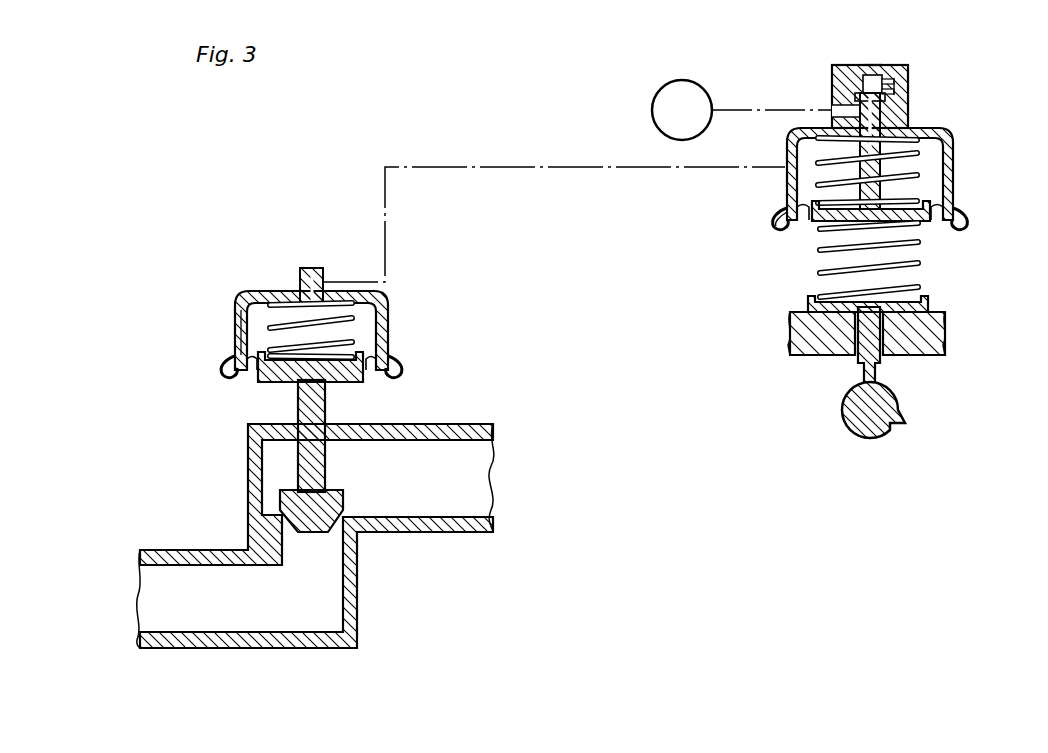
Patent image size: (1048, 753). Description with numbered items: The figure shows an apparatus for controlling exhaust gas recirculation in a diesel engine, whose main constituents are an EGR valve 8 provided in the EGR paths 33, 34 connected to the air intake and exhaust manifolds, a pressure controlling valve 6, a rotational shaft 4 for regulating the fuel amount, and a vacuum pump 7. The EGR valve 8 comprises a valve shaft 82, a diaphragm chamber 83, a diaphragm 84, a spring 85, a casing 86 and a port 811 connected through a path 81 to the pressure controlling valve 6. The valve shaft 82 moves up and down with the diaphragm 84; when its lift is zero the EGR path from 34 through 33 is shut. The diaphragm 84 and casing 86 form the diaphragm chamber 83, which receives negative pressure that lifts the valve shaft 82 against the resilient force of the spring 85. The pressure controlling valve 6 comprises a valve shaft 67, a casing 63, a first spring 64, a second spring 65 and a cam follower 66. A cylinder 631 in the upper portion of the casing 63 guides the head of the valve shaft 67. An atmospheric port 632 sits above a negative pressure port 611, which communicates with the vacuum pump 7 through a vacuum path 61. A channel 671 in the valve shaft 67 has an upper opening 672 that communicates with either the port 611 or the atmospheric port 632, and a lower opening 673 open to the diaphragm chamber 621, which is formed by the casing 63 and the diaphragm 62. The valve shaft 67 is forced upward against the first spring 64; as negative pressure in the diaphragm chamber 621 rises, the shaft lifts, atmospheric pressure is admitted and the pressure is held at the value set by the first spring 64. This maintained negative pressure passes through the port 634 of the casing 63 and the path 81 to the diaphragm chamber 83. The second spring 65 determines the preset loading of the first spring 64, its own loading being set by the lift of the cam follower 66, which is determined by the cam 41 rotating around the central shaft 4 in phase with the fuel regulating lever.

The EGR path 33 is at (490, 460).
The EGR path 34 is at (150, 610).
The rotational shaft 4 is at (870, 440).
The cam 41 is at (905, 412).
The pressure controlling valve 6 is at (848, 255).
The vacuum path 61 is at (743, 106).
The negative pressure port 611 is at (832, 108).
The diaphragm 62 is at (955, 224).
The diaphragm chamber 621 is at (780, 215).
The casing 63 is at (908, 97).
The cylinder 631 is at (866, 66).
The atmospheric port 632 is at (908, 68).
The port 634 is at (815, 165).
The first spring 64 is at (945, 206).
The second spring 65 is at (925, 289).
The cam follower 66 is at (870, 372).
The valve shaft 67 is at (881, 160).
The channel 671 is at (908, 118).
The upper opening 672 is at (908, 90).
The lower opening 673 is at (795, 183).
The vacuum pump 7 is at (688, 96).
The EGR valve 8 is at (312, 314).
The path 81 is at (525, 166).
The port 811 is at (312, 283).
The valve shaft 82 is at (297, 412).
The diaphragm chamber 83 is at (240, 318).
The diaphragm 84 is at (363, 370).
The spring 85 is at (367, 318).
The casing 86 is at (240, 344).